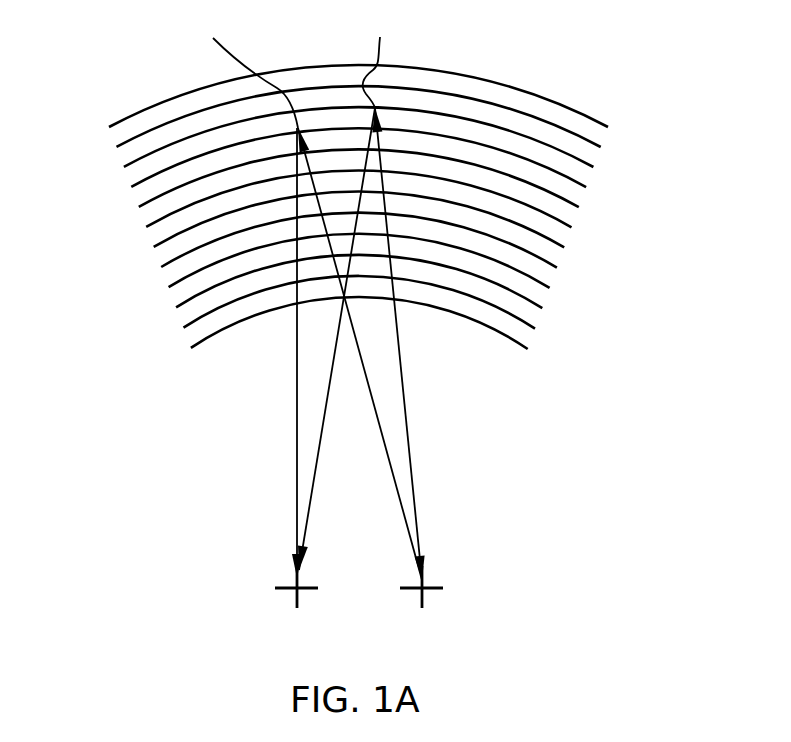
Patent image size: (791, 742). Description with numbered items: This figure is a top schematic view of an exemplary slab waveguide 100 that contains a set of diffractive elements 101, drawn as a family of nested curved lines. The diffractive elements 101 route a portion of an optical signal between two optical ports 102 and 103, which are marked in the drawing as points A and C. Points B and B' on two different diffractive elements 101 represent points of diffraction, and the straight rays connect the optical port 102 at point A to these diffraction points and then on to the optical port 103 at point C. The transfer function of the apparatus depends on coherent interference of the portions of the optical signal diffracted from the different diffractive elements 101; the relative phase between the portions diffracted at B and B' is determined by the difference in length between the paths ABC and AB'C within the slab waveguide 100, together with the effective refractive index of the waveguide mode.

The slab waveguide 100 is at (140, 416).
The diffractive elements 101 is at (625, 125).
The optical port 102 is at (297, 588).
The optical port 103 is at (422, 586).